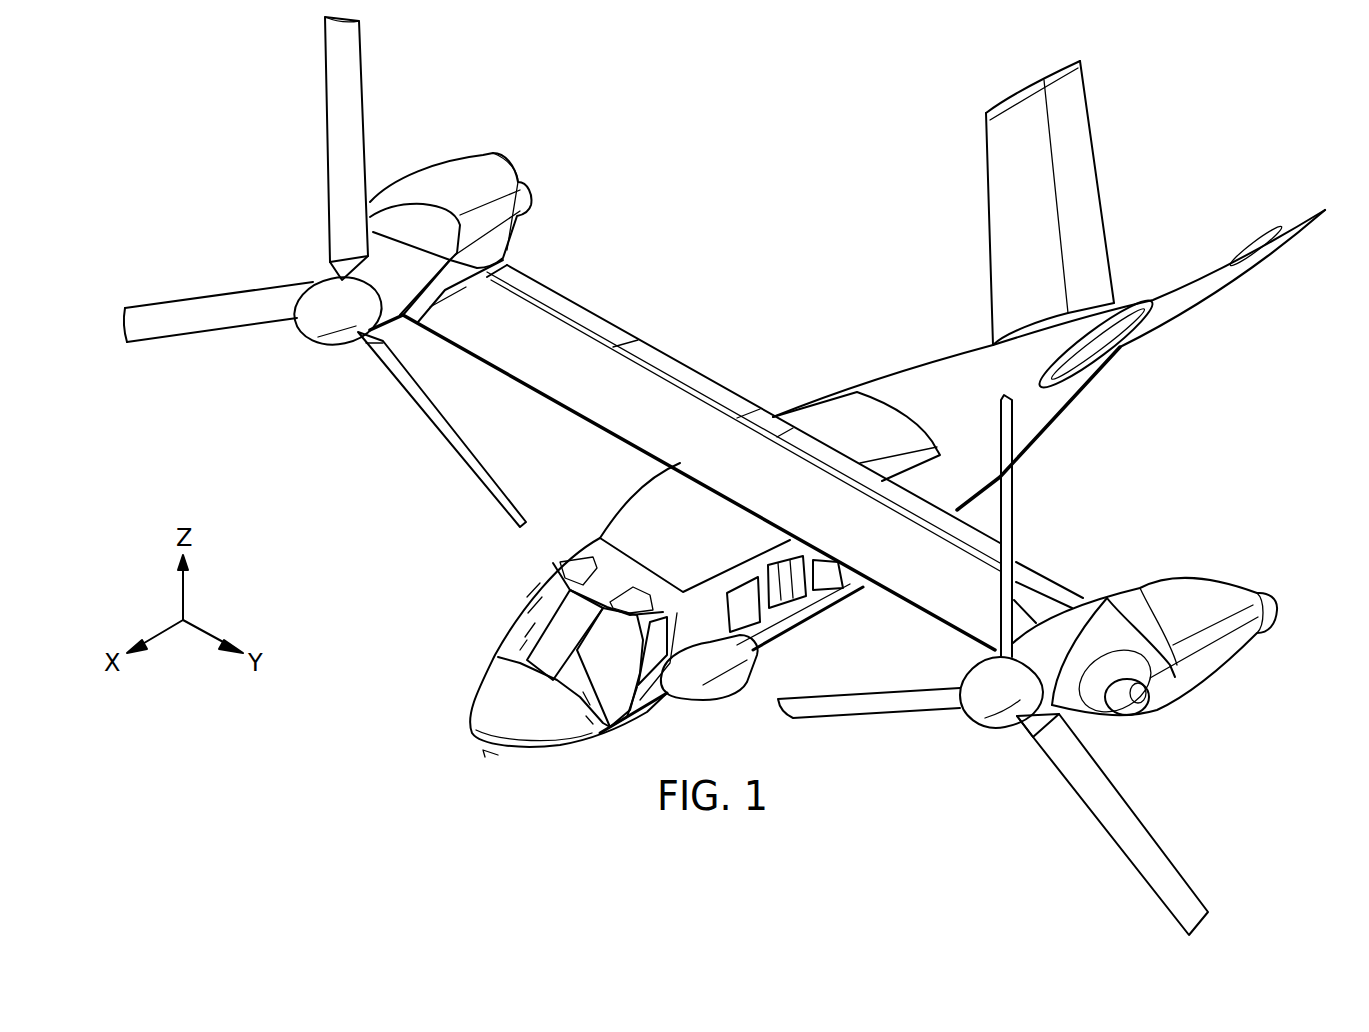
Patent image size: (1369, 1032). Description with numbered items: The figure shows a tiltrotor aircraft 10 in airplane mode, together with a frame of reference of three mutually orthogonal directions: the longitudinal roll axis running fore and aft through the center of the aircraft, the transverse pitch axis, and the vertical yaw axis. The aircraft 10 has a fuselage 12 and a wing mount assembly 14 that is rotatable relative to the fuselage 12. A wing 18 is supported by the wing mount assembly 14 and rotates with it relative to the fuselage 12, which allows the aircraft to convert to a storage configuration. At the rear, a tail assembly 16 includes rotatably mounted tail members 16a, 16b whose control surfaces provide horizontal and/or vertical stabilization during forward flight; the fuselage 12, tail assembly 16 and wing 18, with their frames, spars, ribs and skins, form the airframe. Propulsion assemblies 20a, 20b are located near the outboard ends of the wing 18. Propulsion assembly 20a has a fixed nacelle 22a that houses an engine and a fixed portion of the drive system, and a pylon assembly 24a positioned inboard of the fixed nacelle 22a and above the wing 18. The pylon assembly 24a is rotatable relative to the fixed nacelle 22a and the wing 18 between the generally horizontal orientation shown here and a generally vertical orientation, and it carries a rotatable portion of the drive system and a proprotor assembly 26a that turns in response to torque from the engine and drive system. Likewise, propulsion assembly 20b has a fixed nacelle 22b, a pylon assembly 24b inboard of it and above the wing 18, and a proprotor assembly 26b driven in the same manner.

The tiltrotor aircraft 10 is at (860, 88).
The fuselage 12 is at (935, 375).
The wing mount assembly 14 is at (842, 410).
The tail assembly 16 is at (1198, 166).
The tail member 16a is at (1217, 265).
The tail member 16b is at (1095, 162).
The wing 18 is at (673, 400).
The propulsion assembly 20a is at (1284, 646).
The propulsion assembly 20b is at (538, 223).
The fixed nacelle 22a is at (1204, 594).
The fixed nacelle 22b is at (453, 173).
The pylon assembly 24a is at (1082, 621).
The pylon assembly 24b is at (402, 278).
The proprotor assembly 26a is at (1094, 825).
The proprotor assembly 26b is at (327, 138).